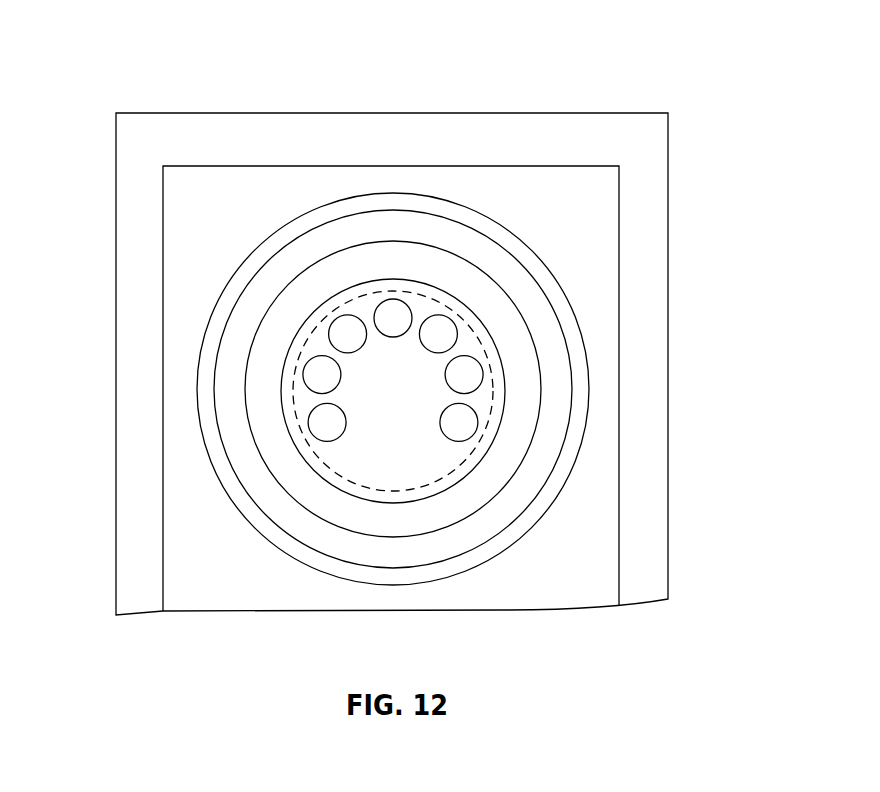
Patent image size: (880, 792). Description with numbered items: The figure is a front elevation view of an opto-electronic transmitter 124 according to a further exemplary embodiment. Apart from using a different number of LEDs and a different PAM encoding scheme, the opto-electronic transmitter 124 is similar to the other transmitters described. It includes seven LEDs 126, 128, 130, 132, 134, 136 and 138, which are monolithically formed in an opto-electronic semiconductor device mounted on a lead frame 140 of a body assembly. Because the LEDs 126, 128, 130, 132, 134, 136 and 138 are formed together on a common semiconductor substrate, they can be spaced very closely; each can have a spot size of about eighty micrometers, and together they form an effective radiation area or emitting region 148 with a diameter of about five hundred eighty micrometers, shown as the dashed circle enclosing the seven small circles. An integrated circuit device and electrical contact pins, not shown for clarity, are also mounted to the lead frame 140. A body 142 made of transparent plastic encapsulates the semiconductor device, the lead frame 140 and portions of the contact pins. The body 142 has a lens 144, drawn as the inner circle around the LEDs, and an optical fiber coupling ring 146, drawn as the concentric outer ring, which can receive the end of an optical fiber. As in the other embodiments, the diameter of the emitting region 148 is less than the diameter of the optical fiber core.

The opto-electronic transmitter 124 is at (704, 41).
The LED 126 is at (308, 412).
The LED 128 is at (480, 412).
The LED 130 is at (340, 316).
The LED 132 is at (450, 320).
The LED 134 is at (306, 360).
The LED 136 is at (474, 358).
The LED 138 is at (393, 299).
The lead frame 140 is at (163, 531).
The body 142 is at (668, 555).
The lens 144 is at (455, 483).
The optical fiber coupling ring 146 is at (400, 583).
The emitting region 148 is at (333, 469).